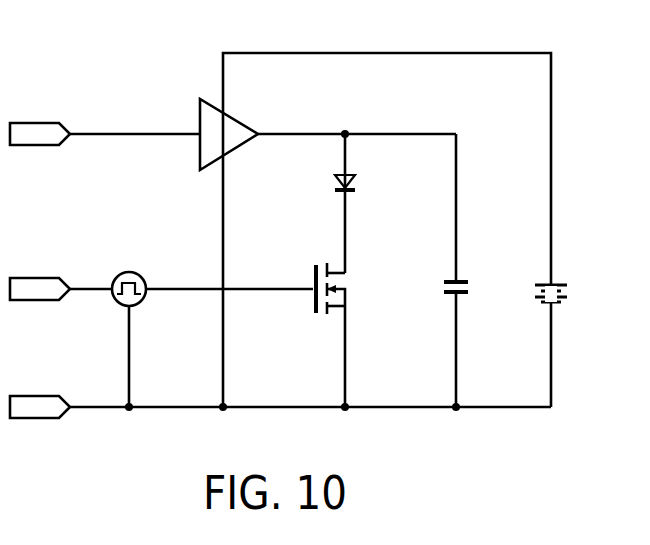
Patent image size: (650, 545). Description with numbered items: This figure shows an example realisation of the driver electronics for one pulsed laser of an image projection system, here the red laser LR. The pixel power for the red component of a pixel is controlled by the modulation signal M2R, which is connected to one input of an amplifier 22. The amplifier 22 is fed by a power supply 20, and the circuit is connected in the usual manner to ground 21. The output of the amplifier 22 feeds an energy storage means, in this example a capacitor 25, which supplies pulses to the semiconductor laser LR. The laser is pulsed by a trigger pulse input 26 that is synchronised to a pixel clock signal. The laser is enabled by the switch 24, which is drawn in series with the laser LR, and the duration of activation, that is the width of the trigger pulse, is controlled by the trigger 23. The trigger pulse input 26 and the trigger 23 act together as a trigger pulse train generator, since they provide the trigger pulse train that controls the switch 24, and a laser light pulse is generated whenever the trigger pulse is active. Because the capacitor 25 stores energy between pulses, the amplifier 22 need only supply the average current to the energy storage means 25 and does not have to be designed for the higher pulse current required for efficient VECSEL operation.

The power supply 20 is at (562, 279).
The ground 21 is at (34, 401).
The amplifier 22 is at (233, 114).
The trigger 23 is at (138, 275).
The switch 24 is at (343, 283).
The energy storage means (capacitor) 25 is at (463, 279).
The trigger pulse input 26 is at (34, 282).
The modulation signal M2R is at (35, 128).
The red laser LR is at (358, 181).